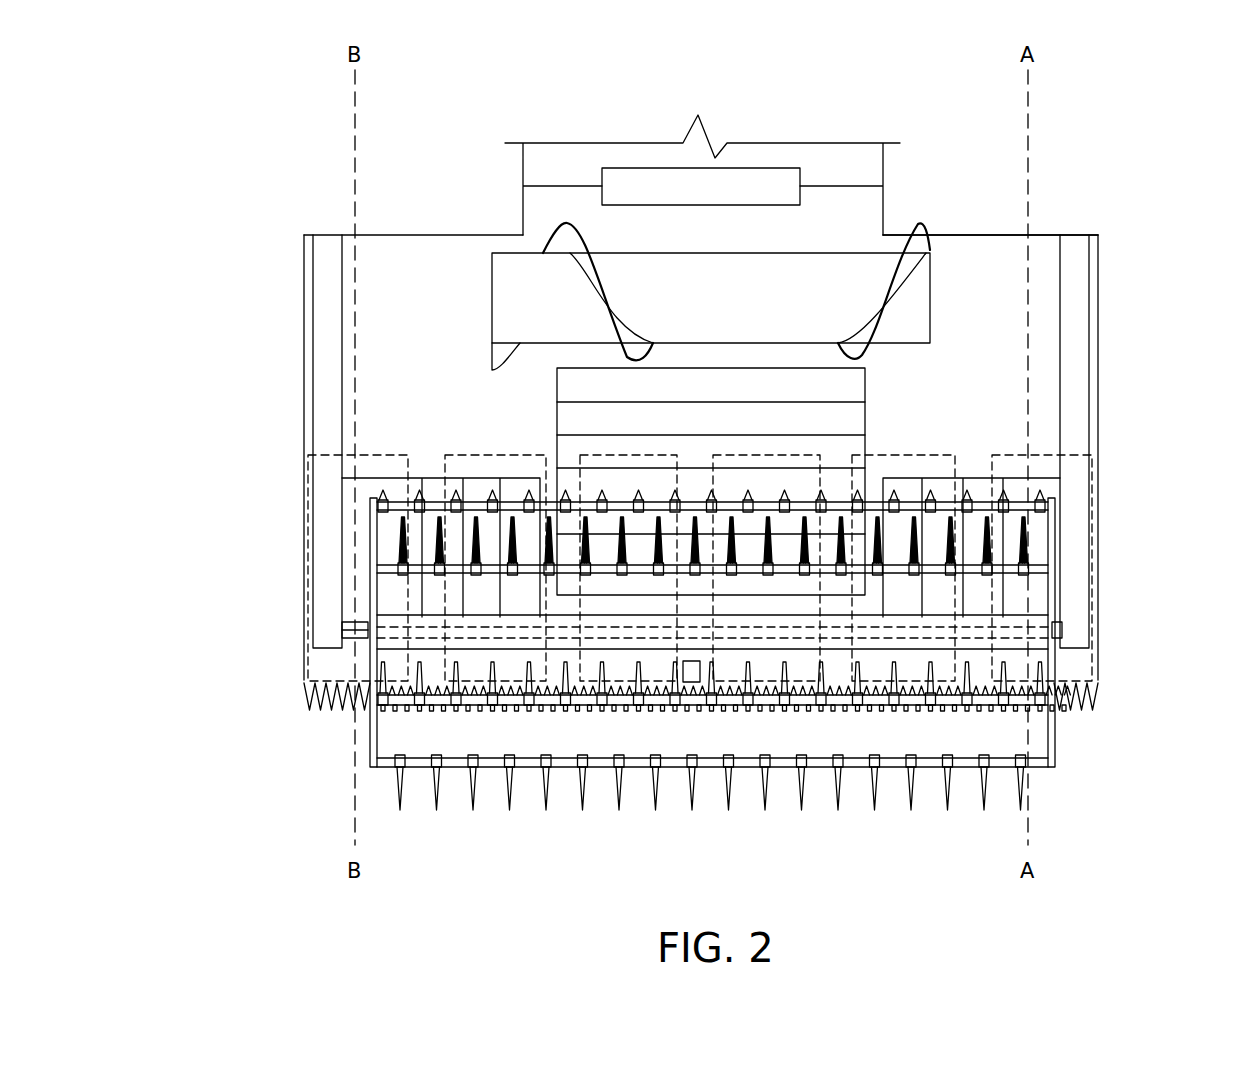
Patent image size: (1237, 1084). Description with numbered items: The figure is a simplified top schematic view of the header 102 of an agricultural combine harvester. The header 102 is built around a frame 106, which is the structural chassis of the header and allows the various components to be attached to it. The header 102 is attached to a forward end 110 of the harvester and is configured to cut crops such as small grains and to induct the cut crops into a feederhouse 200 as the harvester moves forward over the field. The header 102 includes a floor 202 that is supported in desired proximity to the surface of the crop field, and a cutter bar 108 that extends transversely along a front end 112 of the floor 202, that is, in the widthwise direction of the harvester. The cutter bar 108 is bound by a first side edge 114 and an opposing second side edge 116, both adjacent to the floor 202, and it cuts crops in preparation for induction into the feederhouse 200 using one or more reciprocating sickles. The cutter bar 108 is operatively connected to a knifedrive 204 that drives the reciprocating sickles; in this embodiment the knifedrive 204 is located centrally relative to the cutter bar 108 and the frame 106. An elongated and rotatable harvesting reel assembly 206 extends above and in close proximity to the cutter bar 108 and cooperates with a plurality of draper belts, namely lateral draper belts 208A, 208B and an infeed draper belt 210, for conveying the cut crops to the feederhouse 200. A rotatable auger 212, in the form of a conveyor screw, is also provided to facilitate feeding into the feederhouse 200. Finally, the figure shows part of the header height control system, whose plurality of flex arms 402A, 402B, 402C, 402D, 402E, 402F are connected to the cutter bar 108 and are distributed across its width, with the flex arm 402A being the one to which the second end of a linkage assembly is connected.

The header 102 is at (1142, 205).
The frame 106 is at (980, 235).
The cutter bar 108 is at (305, 693).
The forward end 110 is at (762, 155).
The front end 112 is at (842, 682).
The first side edge 114 is at (1098, 420).
The second side edge 116 is at (304, 412).
The feederhouse 200 is at (607, 168).
The floor 202 is at (430, 664).
The knifedrive 204 is at (692, 676).
The harvesting reel assembly 206 is at (362, 593).
The lateral draper belt 208A is at (978, 488).
The lateral draper belt 208B is at (434, 487).
The infeed draper belt 210 is at (770, 380).
The rotatable auger 212 is at (707, 268).
The flex arm 402A is at (1073, 665).
The flex arm 402B is at (910, 663).
The flex arm 402C is at (760, 663).
The flex arm 402D is at (615, 663).
The flex arm 402E is at (480, 663).
The flex arm 402F is at (318, 667).